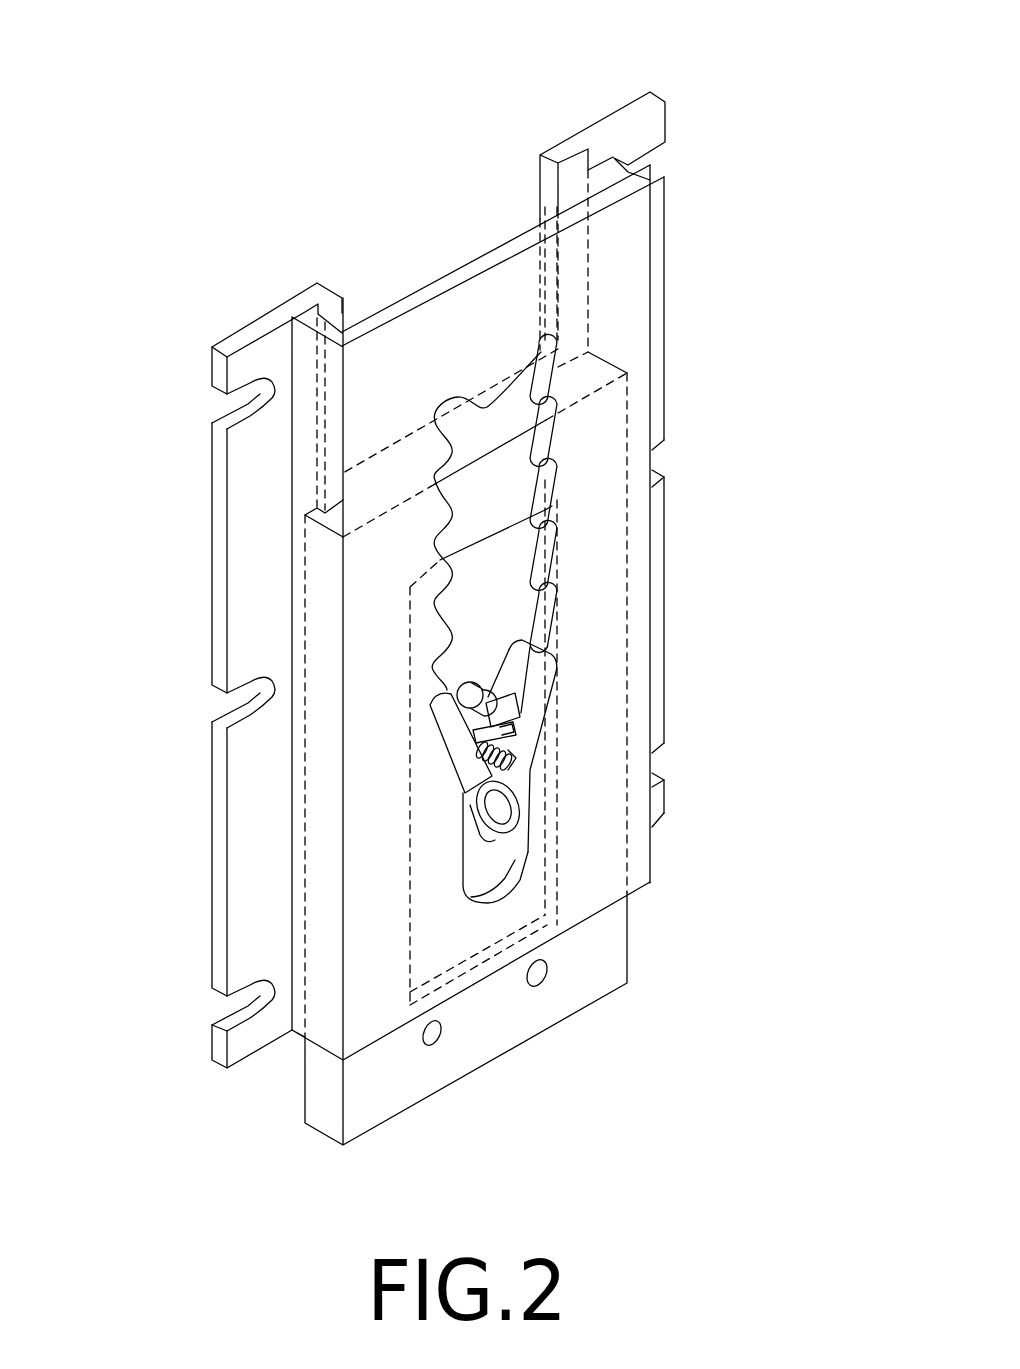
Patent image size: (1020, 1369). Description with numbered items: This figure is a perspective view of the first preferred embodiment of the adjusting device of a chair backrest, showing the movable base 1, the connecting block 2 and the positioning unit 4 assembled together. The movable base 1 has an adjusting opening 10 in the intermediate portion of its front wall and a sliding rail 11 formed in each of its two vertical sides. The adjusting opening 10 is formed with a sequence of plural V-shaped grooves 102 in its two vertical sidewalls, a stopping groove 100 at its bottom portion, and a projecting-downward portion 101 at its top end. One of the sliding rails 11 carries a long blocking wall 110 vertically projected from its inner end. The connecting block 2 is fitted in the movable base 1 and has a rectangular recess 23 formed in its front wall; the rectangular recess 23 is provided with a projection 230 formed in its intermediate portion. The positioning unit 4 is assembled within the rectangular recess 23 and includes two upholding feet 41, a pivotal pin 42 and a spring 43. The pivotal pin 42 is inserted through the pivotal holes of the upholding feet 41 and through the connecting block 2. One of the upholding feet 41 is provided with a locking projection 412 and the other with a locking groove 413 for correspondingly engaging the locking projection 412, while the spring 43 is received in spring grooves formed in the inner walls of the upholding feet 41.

The movable base 1 is at (615, 272).
The adjusting opening 10 is at (477, 427).
The stopping groove 100 is at (515, 873).
The projecting-downward portion 101 is at (487, 407).
The V-shaped grooves 102 is at (557, 530).
The sliding rail 11 is at (603, 167).
The blocking wall 110 is at (338, 313).
The connecting block 2 is at (387, 1085).
The rectangular recess 23 is at (547, 940).
The projection 230 is at (467, 685).
The positioning unit 4 is at (437, 748).
The upholding feet 41 is at (553, 660).
The locking projection 412 is at (478, 752).
The locking groove 413 is at (510, 733).
The pivotal pin 42 is at (500, 807).
The spring 43 is at (500, 763).